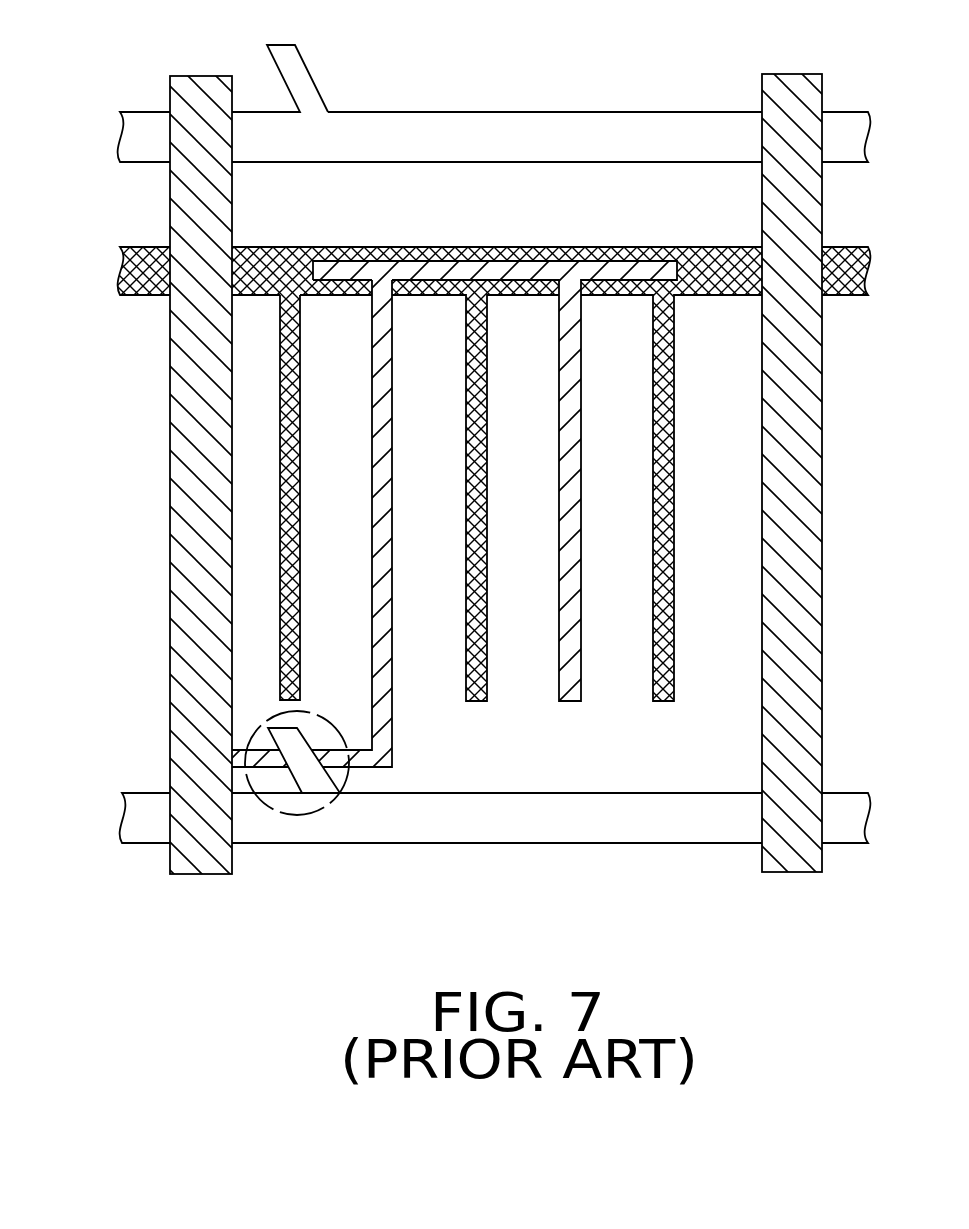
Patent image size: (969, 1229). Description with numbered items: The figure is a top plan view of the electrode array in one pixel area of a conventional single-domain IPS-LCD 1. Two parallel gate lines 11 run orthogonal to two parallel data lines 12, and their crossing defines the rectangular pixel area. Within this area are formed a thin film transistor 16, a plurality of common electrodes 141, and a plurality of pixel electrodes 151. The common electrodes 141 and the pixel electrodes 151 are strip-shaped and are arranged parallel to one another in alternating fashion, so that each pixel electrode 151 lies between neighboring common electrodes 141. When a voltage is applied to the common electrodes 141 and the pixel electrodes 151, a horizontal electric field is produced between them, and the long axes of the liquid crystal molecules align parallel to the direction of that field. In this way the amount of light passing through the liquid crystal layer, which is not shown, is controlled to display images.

The single-domain IPS-LCD 1 is at (498, 49).
The gate line 11 is at (158, 823).
The data line 12 is at (197, 95).
The common electrode 141 is at (278, 457).
The pixel electrode 151 is at (380, 465).
The thin film transistor 16 is at (300, 812).